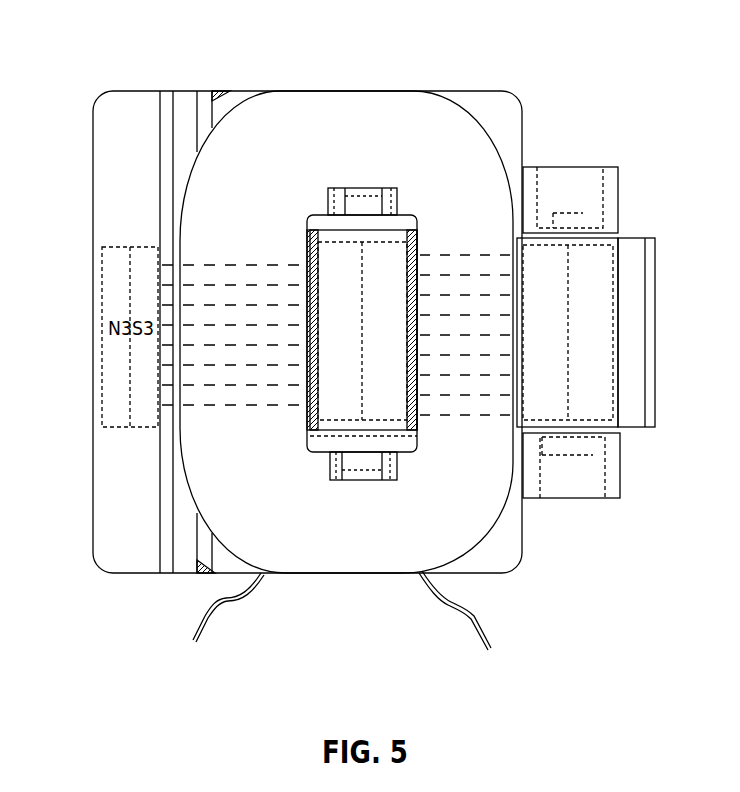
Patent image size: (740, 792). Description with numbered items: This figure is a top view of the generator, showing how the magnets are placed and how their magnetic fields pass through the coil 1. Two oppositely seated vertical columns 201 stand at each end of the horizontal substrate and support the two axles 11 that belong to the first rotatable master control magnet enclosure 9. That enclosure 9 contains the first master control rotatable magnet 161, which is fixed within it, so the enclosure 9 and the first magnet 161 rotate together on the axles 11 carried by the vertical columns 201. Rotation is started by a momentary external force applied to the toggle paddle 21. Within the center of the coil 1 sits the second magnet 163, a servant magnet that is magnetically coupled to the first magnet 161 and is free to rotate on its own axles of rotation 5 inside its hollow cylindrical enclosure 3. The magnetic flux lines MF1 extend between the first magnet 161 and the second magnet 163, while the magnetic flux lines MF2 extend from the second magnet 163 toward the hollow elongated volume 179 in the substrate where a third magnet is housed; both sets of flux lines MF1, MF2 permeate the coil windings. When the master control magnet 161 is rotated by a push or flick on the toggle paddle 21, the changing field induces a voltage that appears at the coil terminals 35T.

The coil 1 is at (310, 120).
The hollow cylindrical enclosure 3 is at (338, 427).
The axles of rotation 5 is at (357, 195).
The first rotatable master control magnet enclosure 9 is at (575, 380).
The axles 11 is at (552, 213).
The toggle paddle 21 is at (635, 288).
The first master control rotatable magnet 161 is at (579, 244).
The second magnet 163 is at (390, 413).
The hollow elongated volume 179 is at (130, 130).
The vertical columns 201 is at (599, 360).
The coil terminals 35T is at (221, 612).
The magnetic flux lines MF1 is at (465, 415).
The magnetic flux lines MF2 is at (207, 407).